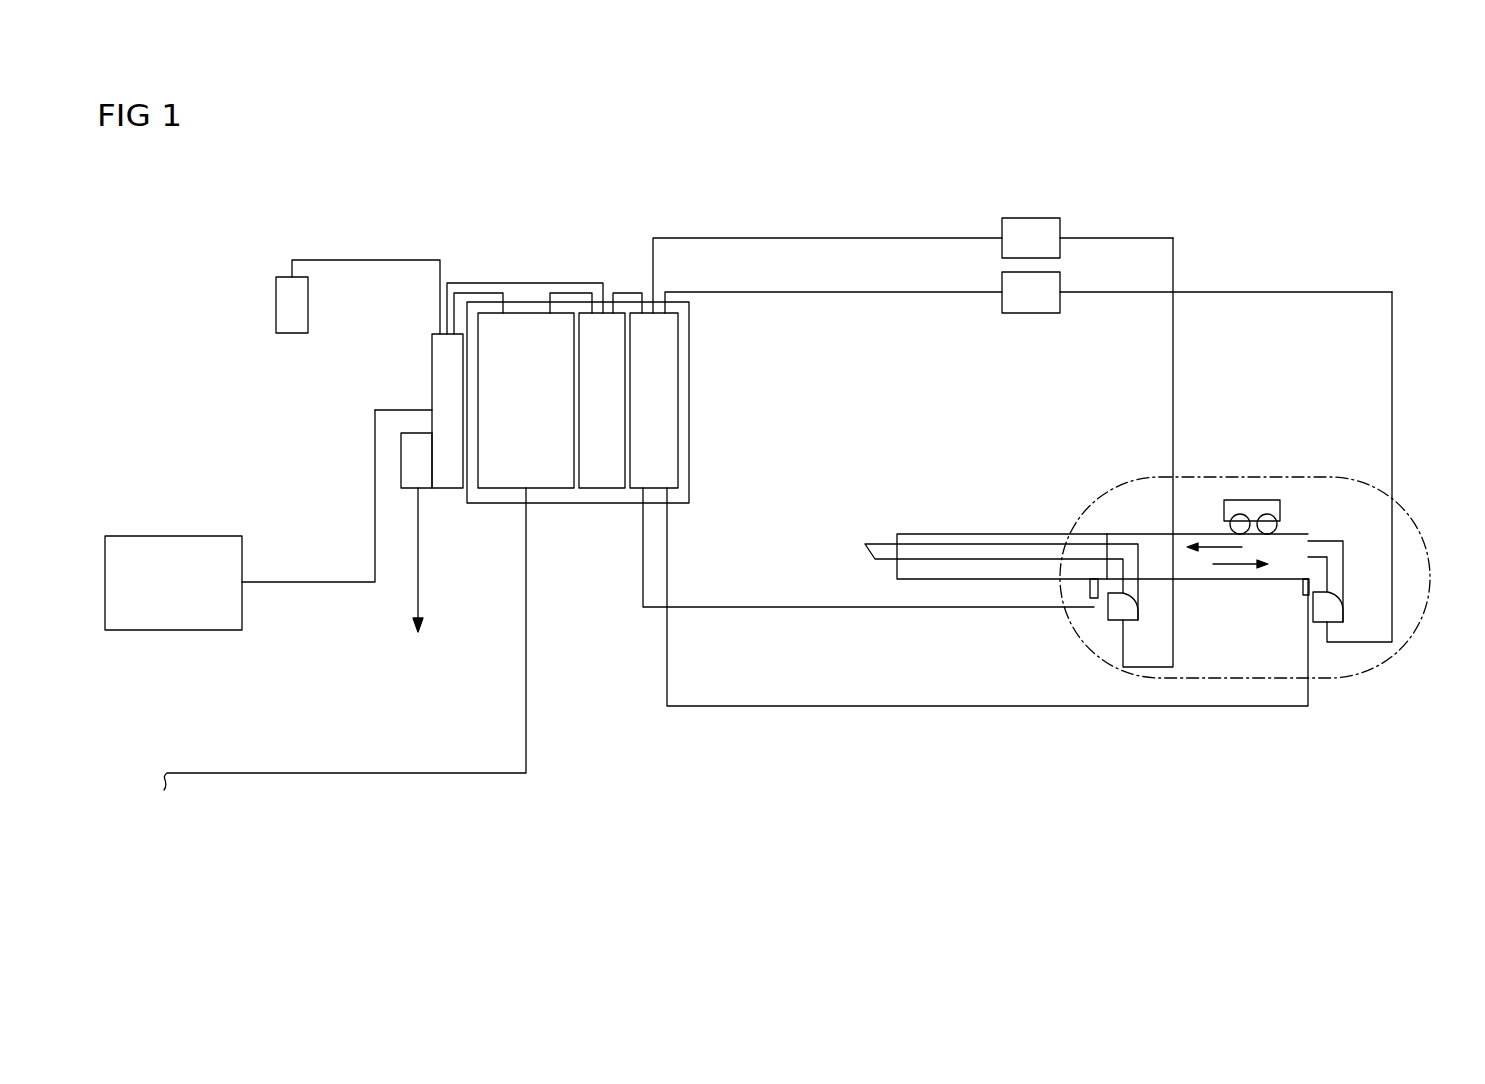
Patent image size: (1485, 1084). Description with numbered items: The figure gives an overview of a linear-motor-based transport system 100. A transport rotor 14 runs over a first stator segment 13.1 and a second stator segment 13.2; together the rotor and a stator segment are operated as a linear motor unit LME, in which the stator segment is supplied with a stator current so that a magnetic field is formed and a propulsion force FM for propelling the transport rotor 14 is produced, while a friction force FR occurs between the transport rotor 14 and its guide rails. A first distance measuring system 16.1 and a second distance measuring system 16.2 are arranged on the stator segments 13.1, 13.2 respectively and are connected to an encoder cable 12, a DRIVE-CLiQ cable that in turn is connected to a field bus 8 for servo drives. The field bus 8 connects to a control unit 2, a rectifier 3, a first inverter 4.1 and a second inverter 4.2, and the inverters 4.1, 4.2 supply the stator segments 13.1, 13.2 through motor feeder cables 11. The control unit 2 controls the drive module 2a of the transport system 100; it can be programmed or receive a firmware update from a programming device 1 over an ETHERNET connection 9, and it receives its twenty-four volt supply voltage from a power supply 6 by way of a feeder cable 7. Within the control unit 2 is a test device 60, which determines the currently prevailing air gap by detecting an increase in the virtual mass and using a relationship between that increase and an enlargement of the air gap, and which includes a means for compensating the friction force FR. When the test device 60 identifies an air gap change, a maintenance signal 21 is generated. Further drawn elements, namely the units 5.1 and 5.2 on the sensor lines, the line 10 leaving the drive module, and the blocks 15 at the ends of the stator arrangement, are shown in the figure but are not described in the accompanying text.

The linear-motor-based transport system 100 is at (1040, 188).
The programming device 1 is at (170, 632).
The control unit 2 is at (447, 488).
The drive module 2a is at (490, 503).
The rectifier 3 is at (556, 488).
The first inverter 4.1 is at (597, 488).
The second inverter 4.2 is at (641, 488).
The first sensor 5.1 is at (1002, 285).
The second sensor 5.2 is at (1002, 230).
The power supply 6 is at (276, 292).
The feeder cable 7 is at (366, 260).
The field bus 8 is at (627, 284).
The ETHERNET connection 9 is at (300, 582).
The output line 10 is at (302, 772).
The motor feeder cables 11 is at (762, 608).
The encoder cable 12 is at (806, 238).
The first stator segment 13.1 is at (1005, 533).
The second stator segment 13.2 is at (1127, 534).
The transport rotor 14 is at (1250, 500).
The brakes 15 is at (1115, 622).
The first distance measuring system 16.1 is at (882, 533).
The second distance measuring system 16.2 is at (1325, 541).
The maintenance signal 21 is at (418, 595).
The test device 60 is at (401, 460).
The propulsion force FM is at (1212, 545).
The friction force FR is at (1233, 567).
The linear motor unit LME is at (1398, 663).